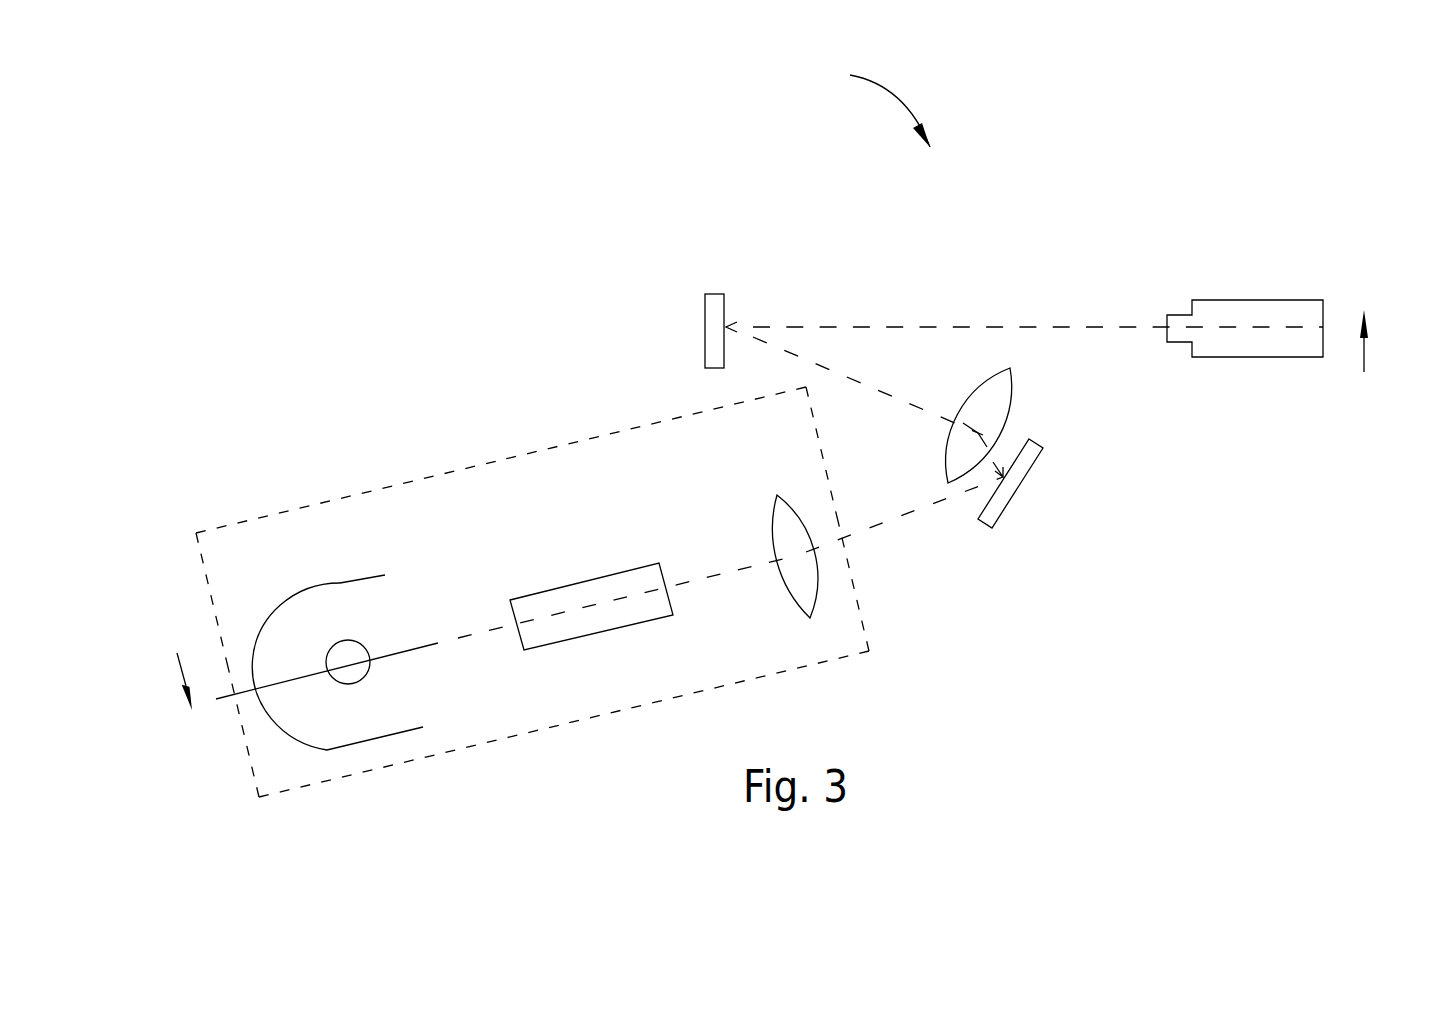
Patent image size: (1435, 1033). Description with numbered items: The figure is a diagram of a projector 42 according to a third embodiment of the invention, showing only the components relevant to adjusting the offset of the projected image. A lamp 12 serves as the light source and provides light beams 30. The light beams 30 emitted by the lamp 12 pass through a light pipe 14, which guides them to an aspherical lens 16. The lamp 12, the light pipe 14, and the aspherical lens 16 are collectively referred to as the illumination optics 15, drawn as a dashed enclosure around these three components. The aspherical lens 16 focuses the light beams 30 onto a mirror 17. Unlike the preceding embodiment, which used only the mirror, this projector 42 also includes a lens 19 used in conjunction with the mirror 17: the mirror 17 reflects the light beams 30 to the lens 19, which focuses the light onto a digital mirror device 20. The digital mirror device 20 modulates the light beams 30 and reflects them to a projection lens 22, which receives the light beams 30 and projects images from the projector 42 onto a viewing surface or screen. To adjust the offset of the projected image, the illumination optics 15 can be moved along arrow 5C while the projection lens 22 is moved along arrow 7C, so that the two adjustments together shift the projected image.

The lamp 12 is at (342, 580).
The light pipe 14 is at (583, 580).
The illumination optics 15 is at (458, 467).
The aspherical lens 16 is at (817, 587).
The mirror 17 is at (1022, 482).
The lens 19 is at (1010, 390).
The digital mirror device (DMD) 20 is at (713, 294).
The projection lens 22 is at (1266, 300).
The light beams 30 is at (711, 577).
The projector 42 is at (870, 103).
The arrow 5C is at (178, 665).
The arrow 7C is at (1367, 345).